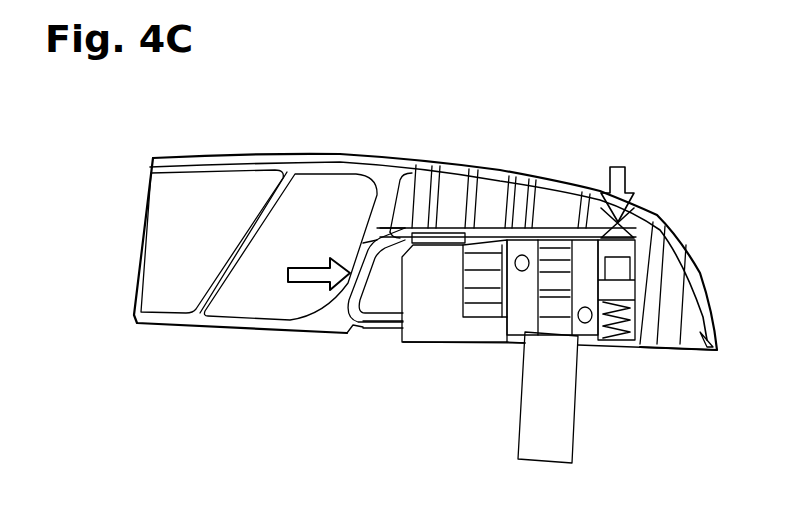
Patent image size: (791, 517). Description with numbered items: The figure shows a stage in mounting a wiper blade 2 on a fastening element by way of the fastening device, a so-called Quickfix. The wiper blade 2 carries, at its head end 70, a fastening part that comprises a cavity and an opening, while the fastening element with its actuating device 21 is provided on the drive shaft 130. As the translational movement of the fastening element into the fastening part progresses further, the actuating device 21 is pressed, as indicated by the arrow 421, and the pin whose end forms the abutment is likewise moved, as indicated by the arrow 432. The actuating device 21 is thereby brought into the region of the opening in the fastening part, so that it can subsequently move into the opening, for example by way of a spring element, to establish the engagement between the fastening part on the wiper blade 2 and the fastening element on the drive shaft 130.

The wiper blade 2 is at (127, 146).
The head end 70 is at (503, 157).
The actuating device 21 is at (372, 287).
The arrow 421 is at (307, 273).
The arrow 432 is at (620, 180).
The drive shaft 130 is at (563, 425).